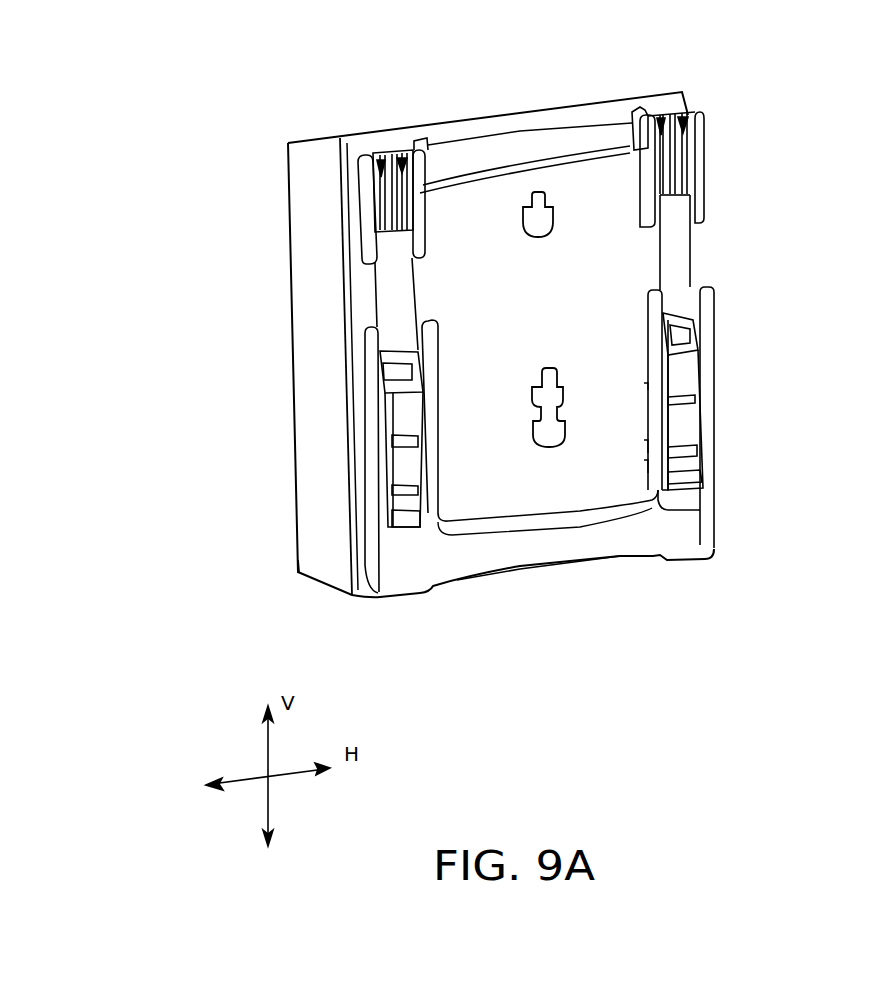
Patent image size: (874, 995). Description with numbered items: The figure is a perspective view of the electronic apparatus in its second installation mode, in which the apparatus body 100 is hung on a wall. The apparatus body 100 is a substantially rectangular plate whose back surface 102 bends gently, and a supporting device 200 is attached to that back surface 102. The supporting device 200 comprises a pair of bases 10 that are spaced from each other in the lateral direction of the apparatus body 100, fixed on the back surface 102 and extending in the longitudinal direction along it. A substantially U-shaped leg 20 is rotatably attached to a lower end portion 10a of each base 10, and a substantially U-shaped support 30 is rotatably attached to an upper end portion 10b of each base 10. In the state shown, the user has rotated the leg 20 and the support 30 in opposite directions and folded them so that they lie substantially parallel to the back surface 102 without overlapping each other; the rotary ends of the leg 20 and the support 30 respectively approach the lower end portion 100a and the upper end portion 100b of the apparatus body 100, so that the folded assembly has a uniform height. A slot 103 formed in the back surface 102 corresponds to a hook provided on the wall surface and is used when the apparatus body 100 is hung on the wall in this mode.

The apparatus body 100 is at (293, 349).
The lower end portion of the apparatus body 100a is at (320, 552).
The upper end portion of the apparatus body 100b is at (313, 162).
The back surface 102 is at (499, 207).
The slot 103 is at (537, 192).
The supporting device 200 is at (358, 484).
The base 10 is at (680, 255).
The lower end portion of the base 10a is at (680, 304).
The upper end portion of the base 10b is at (680, 215).
The leg 20 is at (693, 513).
The support 30 is at (682, 160).